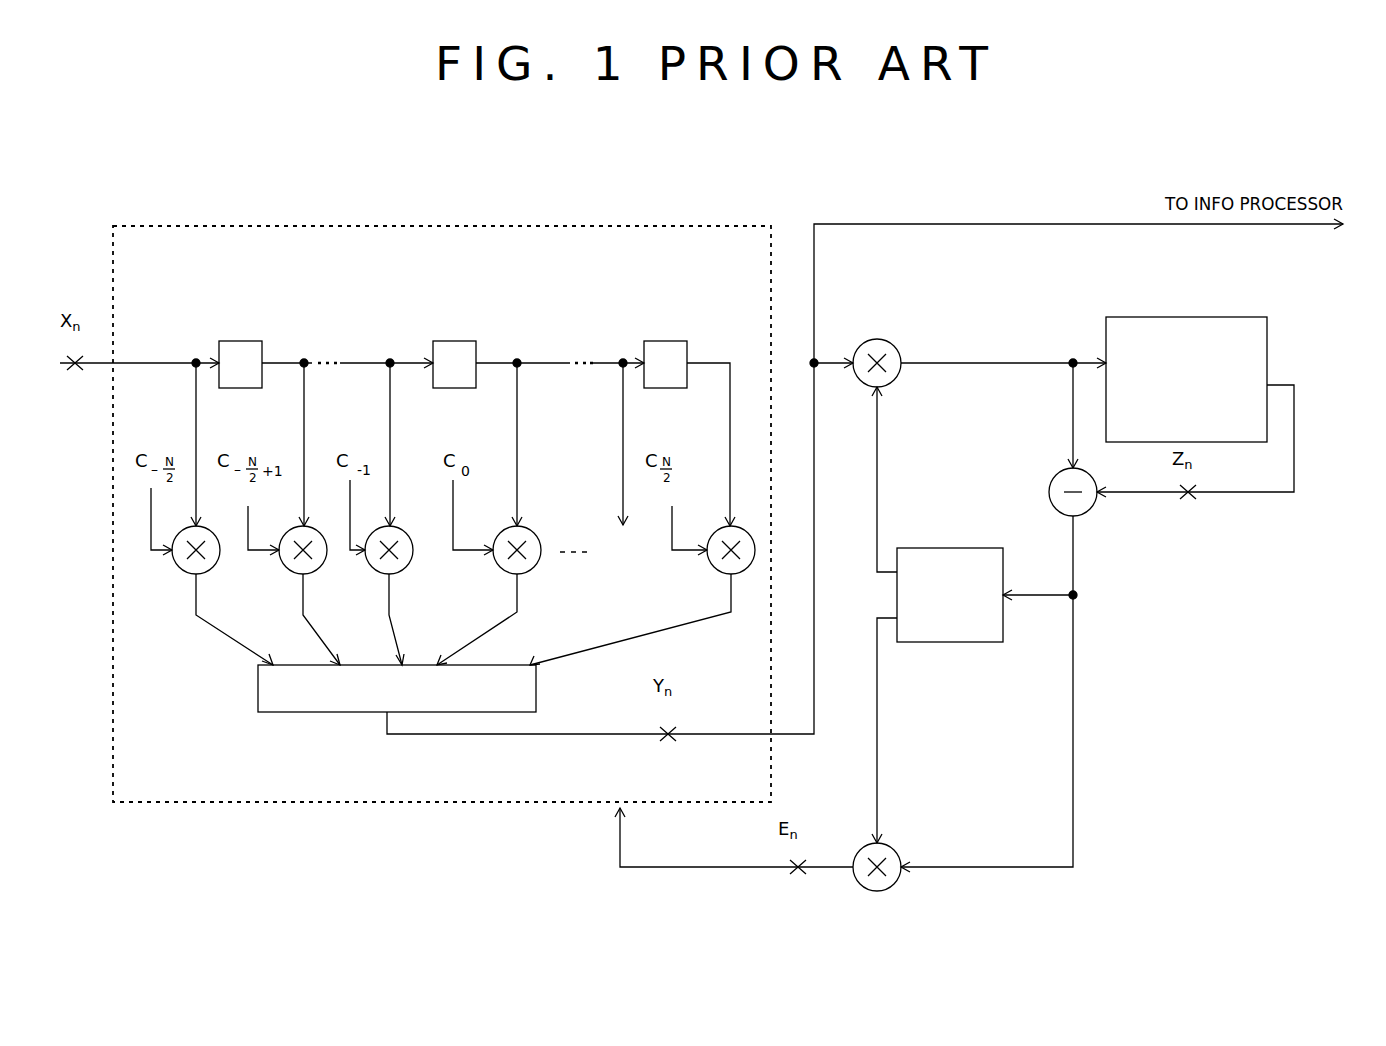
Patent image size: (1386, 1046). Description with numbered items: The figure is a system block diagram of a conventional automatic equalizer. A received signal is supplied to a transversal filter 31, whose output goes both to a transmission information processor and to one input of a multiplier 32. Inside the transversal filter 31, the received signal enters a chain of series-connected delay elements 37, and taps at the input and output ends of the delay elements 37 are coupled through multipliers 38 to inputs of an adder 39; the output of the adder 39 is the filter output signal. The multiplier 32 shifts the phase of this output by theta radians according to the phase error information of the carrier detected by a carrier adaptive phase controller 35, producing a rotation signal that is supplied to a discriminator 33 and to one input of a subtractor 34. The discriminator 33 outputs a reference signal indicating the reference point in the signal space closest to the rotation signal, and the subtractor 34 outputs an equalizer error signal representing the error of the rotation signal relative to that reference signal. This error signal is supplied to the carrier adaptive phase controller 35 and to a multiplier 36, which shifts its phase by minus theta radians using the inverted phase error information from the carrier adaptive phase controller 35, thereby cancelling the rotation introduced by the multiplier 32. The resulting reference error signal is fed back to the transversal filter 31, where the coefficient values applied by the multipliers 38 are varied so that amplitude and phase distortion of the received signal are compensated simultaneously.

The transversal filter 31 is at (456, 223).
The multiplier 32 is at (877, 339).
The discriminator 33 is at (1192, 317).
The subtractor 34 is at (1049, 492).
The carrier adaptive phase controller (CAPC) 35 is at (951, 642).
The multiplier 36 is at (899, 853).
The delay elements 37 is at (240, 341).
The multipliers 38 is at (182, 569).
The adder 39 is at (258, 687).